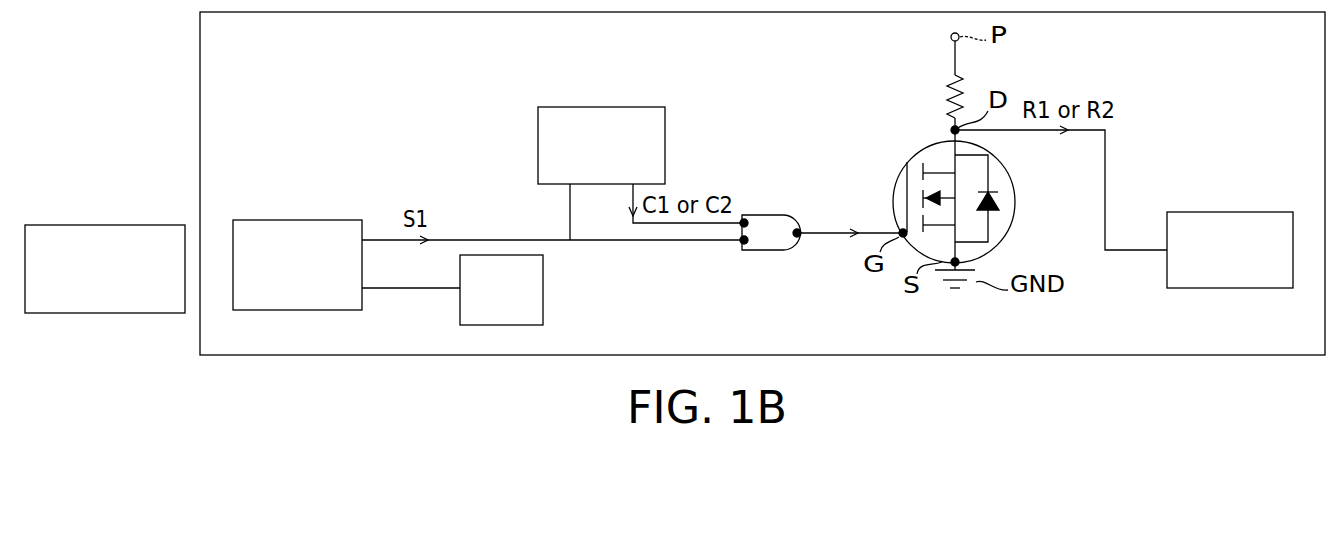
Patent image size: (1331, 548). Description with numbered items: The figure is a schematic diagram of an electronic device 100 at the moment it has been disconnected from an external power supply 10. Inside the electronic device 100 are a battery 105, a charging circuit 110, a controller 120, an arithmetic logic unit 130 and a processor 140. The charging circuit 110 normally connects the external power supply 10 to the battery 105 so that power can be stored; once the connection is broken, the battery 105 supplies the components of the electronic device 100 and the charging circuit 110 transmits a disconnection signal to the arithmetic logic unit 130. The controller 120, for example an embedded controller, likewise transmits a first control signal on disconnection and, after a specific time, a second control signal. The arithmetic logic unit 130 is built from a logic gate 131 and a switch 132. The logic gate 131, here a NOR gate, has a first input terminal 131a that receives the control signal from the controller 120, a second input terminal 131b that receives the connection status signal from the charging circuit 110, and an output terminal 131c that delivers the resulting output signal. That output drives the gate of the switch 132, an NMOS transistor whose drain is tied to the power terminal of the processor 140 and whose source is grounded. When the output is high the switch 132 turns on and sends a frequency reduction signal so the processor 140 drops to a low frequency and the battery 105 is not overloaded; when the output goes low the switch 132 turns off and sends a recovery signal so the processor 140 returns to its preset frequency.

The electronic device 100 is at (422, 46).
The external power supply 10 is at (118, 307).
The charging circuit 110 is at (317, 302).
The battery 105 is at (520, 317).
The controller 120 is at (622, 174).
The arithmetic logic unit 130 is at (903, 86).
The logic gate 131 is at (768, 213).
The first input terminal 131a is at (744, 217).
The second input terminal 131b is at (744, 247).
The output terminal 131c is at (803, 226).
The switch 132 is at (905, 173).
The processor 140 is at (1248, 281).